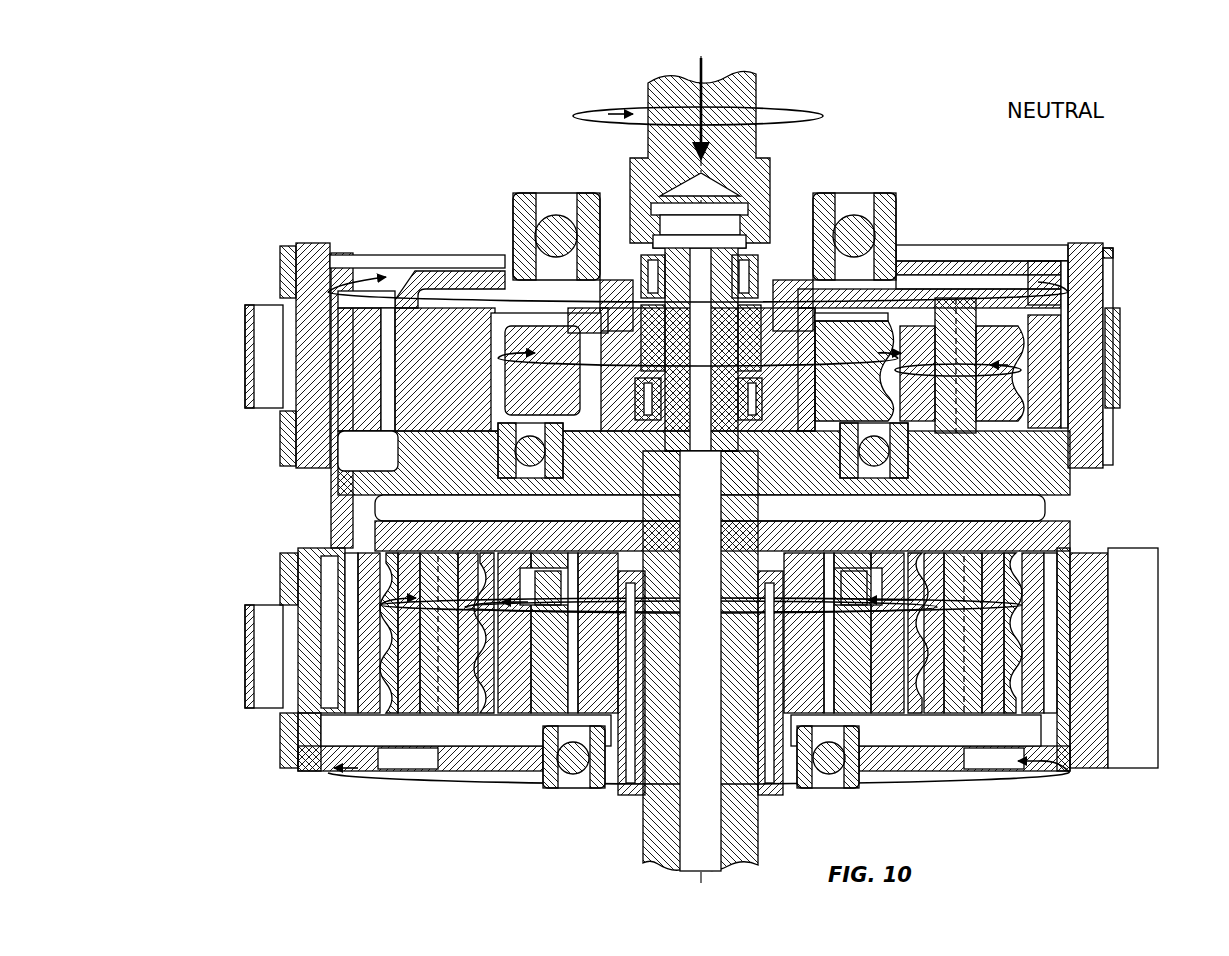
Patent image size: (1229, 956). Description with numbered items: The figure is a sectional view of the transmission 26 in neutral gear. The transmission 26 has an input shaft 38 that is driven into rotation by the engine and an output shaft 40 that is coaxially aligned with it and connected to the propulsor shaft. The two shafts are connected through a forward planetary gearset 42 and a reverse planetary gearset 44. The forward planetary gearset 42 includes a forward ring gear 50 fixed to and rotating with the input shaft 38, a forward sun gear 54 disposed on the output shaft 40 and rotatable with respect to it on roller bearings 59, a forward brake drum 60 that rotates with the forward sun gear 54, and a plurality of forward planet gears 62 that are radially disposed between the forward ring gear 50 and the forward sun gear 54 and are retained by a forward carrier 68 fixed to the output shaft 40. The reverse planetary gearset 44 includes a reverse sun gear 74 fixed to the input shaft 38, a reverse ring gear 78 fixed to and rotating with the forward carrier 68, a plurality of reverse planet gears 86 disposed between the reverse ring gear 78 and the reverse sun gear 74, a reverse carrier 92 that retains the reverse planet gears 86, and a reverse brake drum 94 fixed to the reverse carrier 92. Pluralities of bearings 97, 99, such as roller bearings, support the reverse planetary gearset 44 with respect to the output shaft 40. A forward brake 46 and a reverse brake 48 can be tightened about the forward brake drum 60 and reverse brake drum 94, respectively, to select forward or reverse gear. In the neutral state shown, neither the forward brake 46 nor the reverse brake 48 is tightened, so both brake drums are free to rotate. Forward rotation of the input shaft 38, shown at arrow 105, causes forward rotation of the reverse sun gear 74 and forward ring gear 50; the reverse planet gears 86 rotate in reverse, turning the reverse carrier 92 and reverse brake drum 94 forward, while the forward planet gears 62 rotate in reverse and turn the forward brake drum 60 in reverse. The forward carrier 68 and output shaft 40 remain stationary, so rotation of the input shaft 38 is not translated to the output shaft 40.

The transmission 26 is at (282, 118).
The input shaft 38 is at (736, 76).
The output shaft 40 is at (626, 828).
The forward planetary gearset 42 is at (1180, 555).
The reverse planetary gearset 44 is at (1180, 280).
The forward brake 46 is at (272, 562).
The reverse brake 48 is at (272, 262).
The forward ring gear 50 is at (1030, 522).
The forward sun gear 54 is at (880, 650).
The roller bearings 59 is at (612, 690).
The forward brake drum 60 is at (306, 758).
The forward planet gears 62 is at (1010, 638).
The forward carrier 68 is at (400, 528).
The reverse sun gear 74 is at (880, 348).
The reverse ring gear 78 is at (1090, 276).
The reverse planet gears 86 is at (1003, 335).
The reverse carrier 92 is at (870, 330).
The reverse brake drum 94 is at (301, 242).
The bearings 97 is at (740, 262).
The bearings 99 is at (612, 385).
The arrow 105 is at (790, 102).